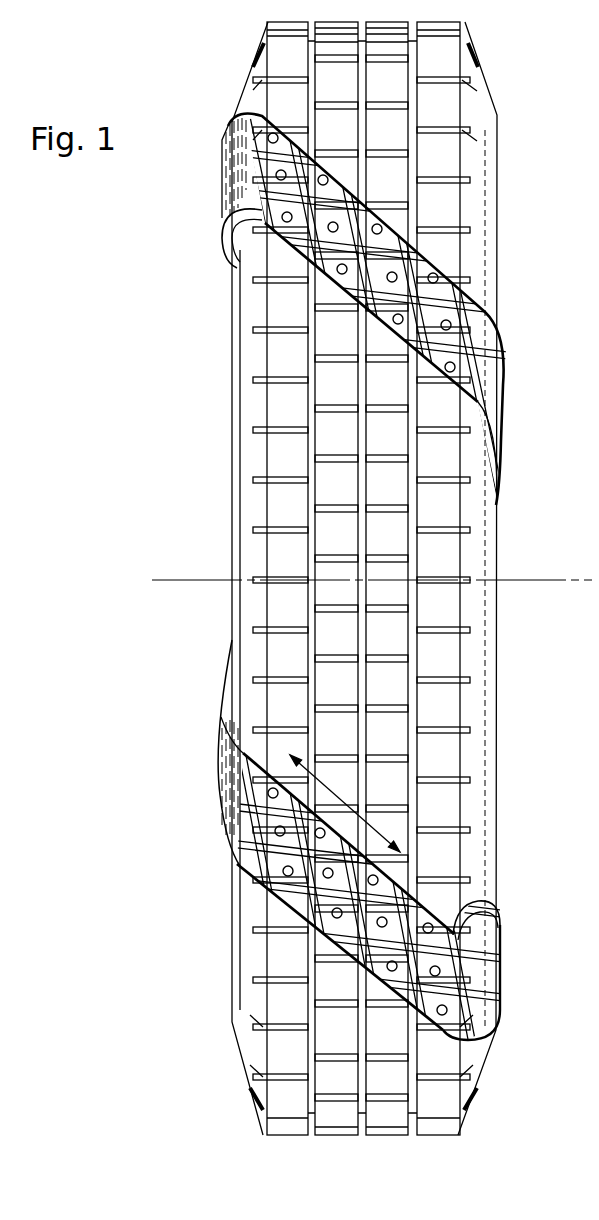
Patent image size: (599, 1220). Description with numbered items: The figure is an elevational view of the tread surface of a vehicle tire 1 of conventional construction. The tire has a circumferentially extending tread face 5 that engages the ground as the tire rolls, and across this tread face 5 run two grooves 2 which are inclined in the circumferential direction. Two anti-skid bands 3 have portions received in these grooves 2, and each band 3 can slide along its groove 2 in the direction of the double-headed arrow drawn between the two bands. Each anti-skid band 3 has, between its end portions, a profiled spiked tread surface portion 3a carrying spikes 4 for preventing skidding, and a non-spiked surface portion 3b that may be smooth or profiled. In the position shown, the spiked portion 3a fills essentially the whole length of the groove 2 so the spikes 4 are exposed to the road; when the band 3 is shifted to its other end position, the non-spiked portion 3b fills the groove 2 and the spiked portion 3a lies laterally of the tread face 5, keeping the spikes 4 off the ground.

The vehicle tire 1 is at (383, 578).
The grooves 2 is at (266, 250).
The anti-skid bands 3 is at (362, 575).
The spiked tread surface portion 3a is at (450, 332).
The non-spiked surface portion 3b is at (237, 190).
The spikes 4 is at (285, 870).
The tread face 5 is at (393, 690).